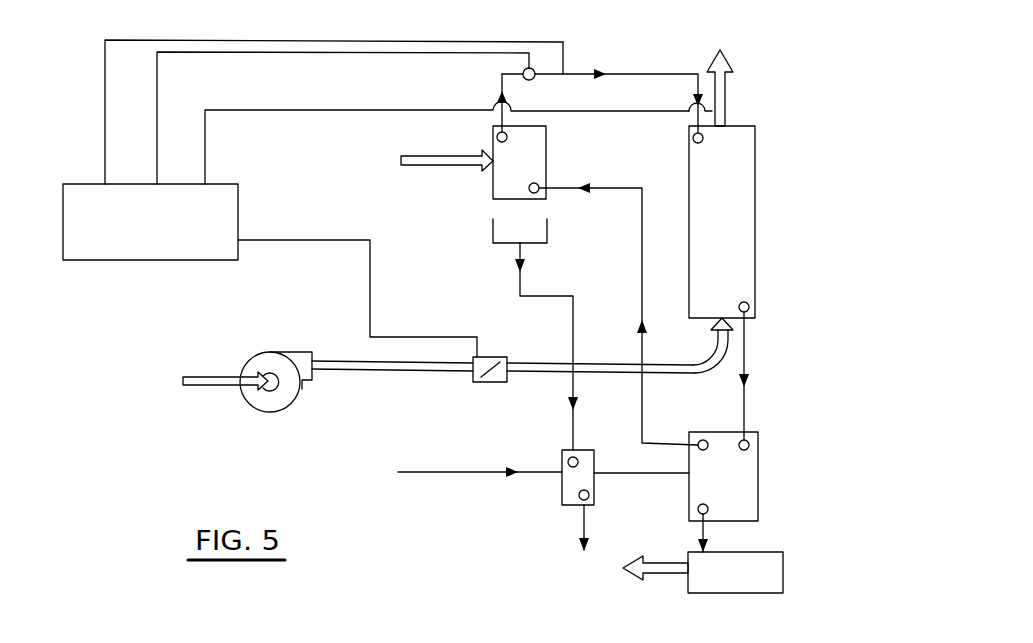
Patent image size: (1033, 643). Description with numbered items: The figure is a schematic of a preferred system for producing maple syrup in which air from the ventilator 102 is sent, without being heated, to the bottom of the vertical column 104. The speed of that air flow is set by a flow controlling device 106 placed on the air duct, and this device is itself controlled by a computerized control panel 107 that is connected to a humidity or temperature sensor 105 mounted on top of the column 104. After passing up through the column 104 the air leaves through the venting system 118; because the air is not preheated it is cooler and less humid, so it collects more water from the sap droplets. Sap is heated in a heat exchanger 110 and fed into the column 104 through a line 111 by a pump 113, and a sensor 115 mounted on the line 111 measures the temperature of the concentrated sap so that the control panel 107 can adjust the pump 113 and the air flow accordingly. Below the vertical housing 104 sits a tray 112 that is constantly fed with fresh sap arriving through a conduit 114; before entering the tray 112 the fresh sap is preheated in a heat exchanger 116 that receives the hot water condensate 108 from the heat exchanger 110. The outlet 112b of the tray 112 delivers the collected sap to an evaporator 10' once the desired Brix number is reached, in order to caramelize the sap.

The computerized control panel 107 is at (80, 183).
The sensor 115 is at (563, 55).
The pump 113 is at (530, 67).
The line 111 is at (643, 73).
The heat exchanger 110 is at (546, 155).
The hot water condensate 108 is at (493, 232).
The vertical column 104 is at (738, 240).
The venting system 118 is at (727, 92).
The humidity or temperature sensor 105 is at (712, 110).
The ventilator 102 is at (280, 351).
The flow controlling device 106 is at (487, 356).
The heat exchanger 116 is at (562, 456).
The conduit 114 is at (474, 476).
The tray 112 is at (758, 488).
The outlet 112b is at (703, 533).
The evaporator 10' is at (729, 572).